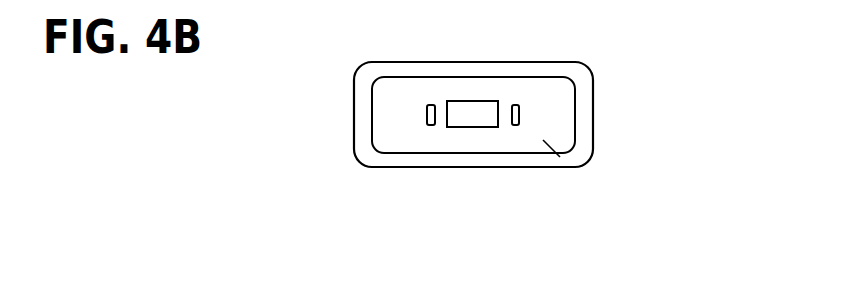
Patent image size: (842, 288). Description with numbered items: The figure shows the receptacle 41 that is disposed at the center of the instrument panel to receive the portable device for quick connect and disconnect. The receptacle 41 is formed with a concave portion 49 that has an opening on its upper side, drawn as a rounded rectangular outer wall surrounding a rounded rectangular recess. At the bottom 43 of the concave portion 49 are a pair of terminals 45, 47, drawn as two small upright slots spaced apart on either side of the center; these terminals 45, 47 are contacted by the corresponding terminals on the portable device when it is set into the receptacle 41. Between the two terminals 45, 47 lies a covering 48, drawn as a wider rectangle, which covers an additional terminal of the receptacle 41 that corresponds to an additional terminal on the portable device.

The receptacle 41 is at (588, 90).
The bottom 43 is at (562, 118).
The terminal 45 is at (430, 124).
The terminal 47 is at (514, 124).
The covering 48 is at (475, 107).
The concave portion 49 is at (543, 140).